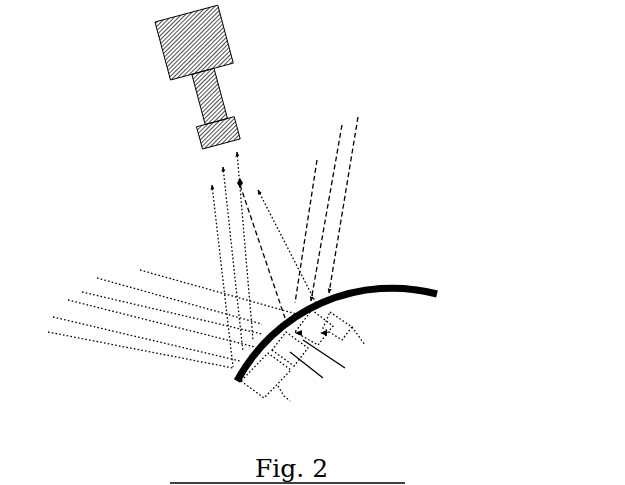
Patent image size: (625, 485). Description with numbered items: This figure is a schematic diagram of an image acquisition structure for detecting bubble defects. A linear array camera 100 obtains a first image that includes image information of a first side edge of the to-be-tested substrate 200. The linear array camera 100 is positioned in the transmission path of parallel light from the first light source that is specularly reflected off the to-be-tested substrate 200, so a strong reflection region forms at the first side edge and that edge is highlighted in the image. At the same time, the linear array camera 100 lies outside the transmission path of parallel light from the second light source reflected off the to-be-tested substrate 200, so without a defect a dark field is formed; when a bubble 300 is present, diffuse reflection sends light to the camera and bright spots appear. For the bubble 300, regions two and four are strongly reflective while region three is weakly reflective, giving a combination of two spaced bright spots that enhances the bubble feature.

The linear array camera 100 is at (229, 89).
The to-be-tested substrate 200 is at (384, 300).
The bubble 300 is at (350, 335).